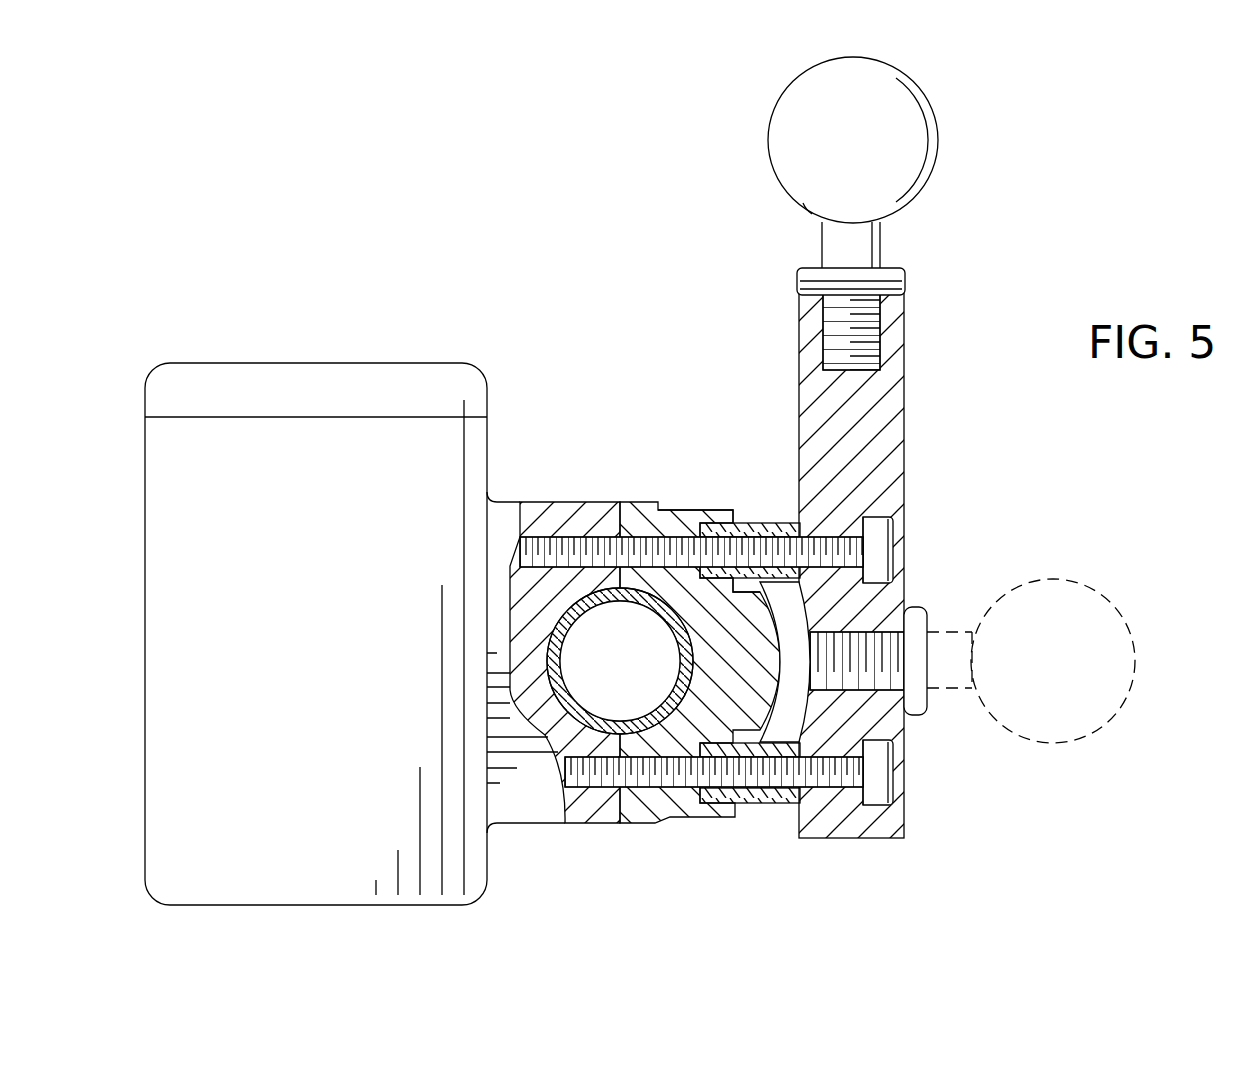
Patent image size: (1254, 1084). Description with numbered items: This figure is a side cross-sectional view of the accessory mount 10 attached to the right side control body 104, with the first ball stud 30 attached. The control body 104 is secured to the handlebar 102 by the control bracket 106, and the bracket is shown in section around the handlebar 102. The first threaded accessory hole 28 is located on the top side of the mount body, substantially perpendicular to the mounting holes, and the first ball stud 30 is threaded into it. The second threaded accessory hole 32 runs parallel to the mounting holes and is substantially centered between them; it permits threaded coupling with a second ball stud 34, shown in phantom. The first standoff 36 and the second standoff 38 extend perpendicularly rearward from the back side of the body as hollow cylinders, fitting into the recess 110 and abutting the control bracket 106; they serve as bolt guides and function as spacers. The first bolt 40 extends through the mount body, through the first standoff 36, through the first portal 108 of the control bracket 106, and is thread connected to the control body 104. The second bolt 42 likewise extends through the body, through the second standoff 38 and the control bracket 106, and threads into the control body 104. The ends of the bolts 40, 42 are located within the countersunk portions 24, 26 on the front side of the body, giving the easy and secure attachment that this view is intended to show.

The accessory mount 10 is at (960, 283).
The countersunk portion 24 is at (907, 532).
The countersunk portion 26 is at (907, 795).
The first threaded accessory hole 28 is at (828, 328).
The first ball stud 30 is at (797, 130).
The second threaded accessory hole 32 is at (895, 683).
The second ball stud 34 is at (1093, 578).
The first standoff 36 is at (764, 522).
The second standoff 38 is at (770, 803).
The first bolt 40 is at (898, 558).
The second bolt 42 is at (898, 760).
The handlebar 102 is at (570, 688).
The right side control body 104 is at (497, 498).
The control bracket 106 is at (650, 820).
The first portal 108 is at (692, 544).
The recess 110 is at (733, 528).